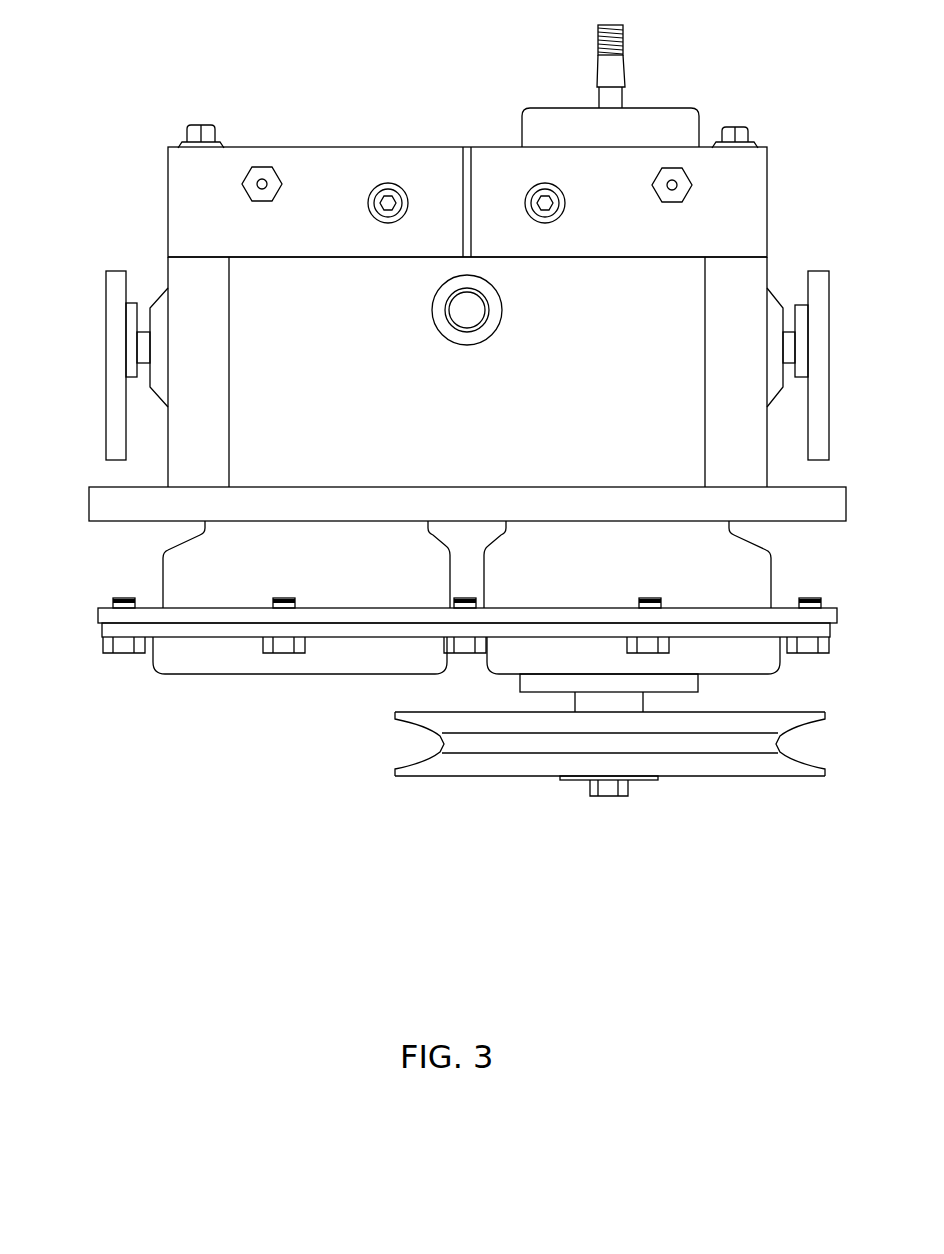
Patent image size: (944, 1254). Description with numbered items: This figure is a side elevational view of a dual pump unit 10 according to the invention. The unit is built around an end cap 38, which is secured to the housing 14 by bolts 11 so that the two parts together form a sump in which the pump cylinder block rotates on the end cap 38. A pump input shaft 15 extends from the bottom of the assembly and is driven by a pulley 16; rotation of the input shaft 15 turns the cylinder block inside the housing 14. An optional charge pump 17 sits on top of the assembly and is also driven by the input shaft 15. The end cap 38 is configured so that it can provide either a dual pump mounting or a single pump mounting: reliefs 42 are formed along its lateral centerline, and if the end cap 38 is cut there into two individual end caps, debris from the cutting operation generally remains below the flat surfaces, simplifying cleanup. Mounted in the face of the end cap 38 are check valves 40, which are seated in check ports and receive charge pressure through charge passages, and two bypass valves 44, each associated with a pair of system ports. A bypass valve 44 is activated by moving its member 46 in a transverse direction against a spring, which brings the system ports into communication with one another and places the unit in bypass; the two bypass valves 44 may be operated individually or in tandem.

The dual pump unit 10 is at (98, 74).
The bolts 11 is at (201, 126).
The housing 14 is at (480, 419).
The pump input shaft 15 is at (643, 702).
The pulley 16 is at (412, 776).
The charge pump 17 is at (523, 117).
The end cap 38 is at (168, 202).
The check valves 40 is at (388, 224).
The reliefs 42 is at (463, 170).
The bypass valves 44 is at (251, 194).
The member 46 is at (268, 182).